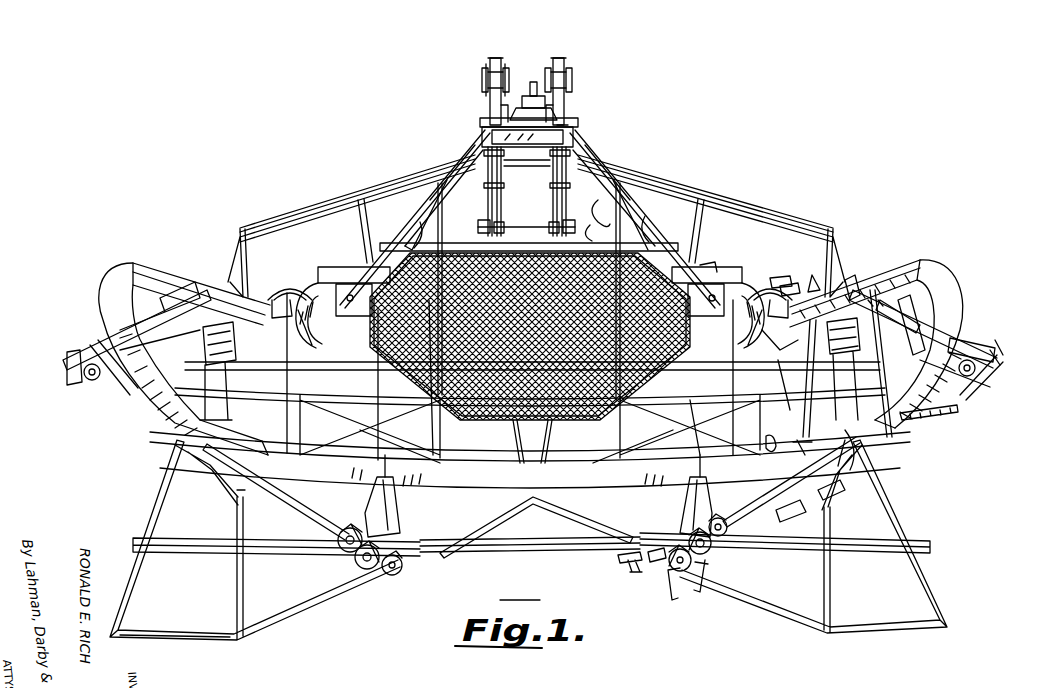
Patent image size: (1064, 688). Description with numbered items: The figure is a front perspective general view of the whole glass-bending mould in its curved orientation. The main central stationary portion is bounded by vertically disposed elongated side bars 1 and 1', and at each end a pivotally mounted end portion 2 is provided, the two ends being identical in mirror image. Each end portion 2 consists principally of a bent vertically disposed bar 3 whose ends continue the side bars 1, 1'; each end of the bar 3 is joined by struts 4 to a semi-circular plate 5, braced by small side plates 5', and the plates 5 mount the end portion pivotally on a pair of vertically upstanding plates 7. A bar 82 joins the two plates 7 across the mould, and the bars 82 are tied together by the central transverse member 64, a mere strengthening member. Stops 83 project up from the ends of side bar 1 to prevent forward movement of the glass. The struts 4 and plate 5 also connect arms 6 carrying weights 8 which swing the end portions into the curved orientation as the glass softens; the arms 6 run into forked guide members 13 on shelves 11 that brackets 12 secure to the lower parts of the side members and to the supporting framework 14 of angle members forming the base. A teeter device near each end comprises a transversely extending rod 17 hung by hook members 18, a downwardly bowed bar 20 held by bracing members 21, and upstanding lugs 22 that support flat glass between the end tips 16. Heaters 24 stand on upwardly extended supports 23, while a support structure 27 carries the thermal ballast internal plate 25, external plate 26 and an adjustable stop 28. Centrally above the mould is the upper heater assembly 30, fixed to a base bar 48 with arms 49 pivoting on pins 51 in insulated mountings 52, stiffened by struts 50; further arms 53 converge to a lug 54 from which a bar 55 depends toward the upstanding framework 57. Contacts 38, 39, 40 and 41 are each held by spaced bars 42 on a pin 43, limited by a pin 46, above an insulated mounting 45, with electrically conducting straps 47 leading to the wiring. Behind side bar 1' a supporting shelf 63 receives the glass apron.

The side bar 1 is at (530, 473).
The side bar 1' is at (530, 299).
The end portion 2 is at (120, 250).
The bent vertically disposed bar 3 is at (880, 290).
The struts 4 is at (820, 280).
The semi-circular plate 5 is at (813, 377).
The small side plates 5' is at (783, 384).
The arms 6 is at (730, 545).
The vertically upstanding plates 7 is at (745, 290).
The weights 8 is at (706, 575).
The shelves 11 is at (650, 558).
The brackets 12 is at (700, 492).
The forked guide member 13 is at (630, 550).
The supporting framework 14 is at (365, 203).
The end tips 16 is at (915, 260).
The transversely extending rod 17 is at (762, 352).
The hook members 18 is at (768, 440).
The longitudinally extending bar 20 is at (735, 412).
The bracing members 21 is at (712, 432).
The upstanding lug 22 is at (660, 448).
The upwardly extended supports 23 is at (960, 390).
The heater 24 is at (876, 262).
The internal plate 25 is at (995, 340).
The external plate 26 is at (978, 330).
The support structure 27 is at (965, 412).
The adjustable stop 28 is at (986, 370).
The upper heater assembly 30 is at (496, 430).
The first contact 38 is at (562, 68).
The second contact 39 is at (492, 62).
The contact 40 is at (572, 122).
The further contact 41 is at (484, 140).
The spaced bars 42 is at (506, 70).
The pin 43 is at (490, 70).
The insulated mounting 45 is at (560, 232).
The pin 46 is at (496, 110).
The electrically conducting straps 47 is at (566, 102).
The base bar 48 is at (670, 242).
The arms 49 is at (575, 242).
The struts 50 is at (400, 238).
The pins 51 is at (590, 225).
The insulated mounting 52 is at (605, 215).
The further arms 53 is at (575, 150).
The lug 54 is at (530, 97).
The bar 55 is at (534, 84).
The upstanding framework 57 is at (565, 110).
The supporting shelf 63 is at (720, 258).
The central transverse member 64 is at (710, 368).
The bar 82 is at (783, 375).
The stops 83 is at (803, 440).